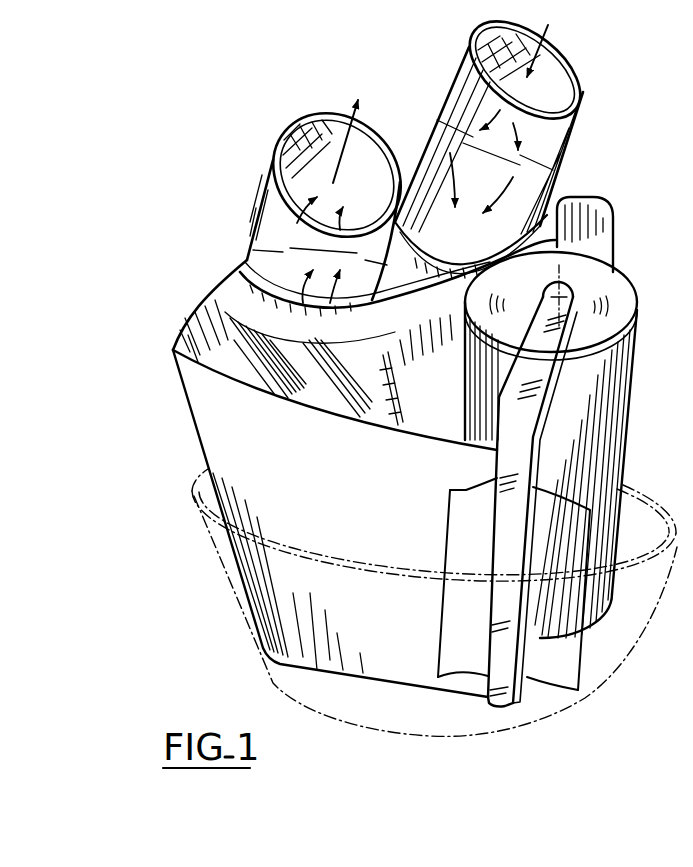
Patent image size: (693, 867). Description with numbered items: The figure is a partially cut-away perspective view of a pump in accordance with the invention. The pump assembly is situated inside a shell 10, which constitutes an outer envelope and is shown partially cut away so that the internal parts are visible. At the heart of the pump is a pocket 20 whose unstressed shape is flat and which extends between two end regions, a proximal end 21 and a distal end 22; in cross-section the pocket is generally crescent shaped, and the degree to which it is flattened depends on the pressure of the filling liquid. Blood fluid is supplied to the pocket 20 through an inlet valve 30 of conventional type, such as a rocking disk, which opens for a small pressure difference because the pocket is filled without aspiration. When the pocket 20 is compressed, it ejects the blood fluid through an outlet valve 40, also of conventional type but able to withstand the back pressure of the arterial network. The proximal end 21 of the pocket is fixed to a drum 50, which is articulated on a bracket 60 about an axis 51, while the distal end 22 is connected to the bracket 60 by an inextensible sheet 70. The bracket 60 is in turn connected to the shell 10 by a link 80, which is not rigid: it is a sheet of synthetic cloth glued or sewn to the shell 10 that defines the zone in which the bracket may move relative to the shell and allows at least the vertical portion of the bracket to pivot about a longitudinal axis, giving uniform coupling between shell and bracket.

The shell 10 is at (643, 573).
The pocket 20 is at (443, 395).
The proximal end region 21 is at (602, 233).
The distal end region 22 is at (173, 350).
The inlet valve 30 is at (480, 148).
The outlet valve 40 is at (265, 240).
The drum 50 is at (597, 428).
The axis 51 is at (565, 285).
The bracket 60 is at (542, 370).
The inextensible sheet 70 is at (366, 519).
The link 80 is at (472, 510).